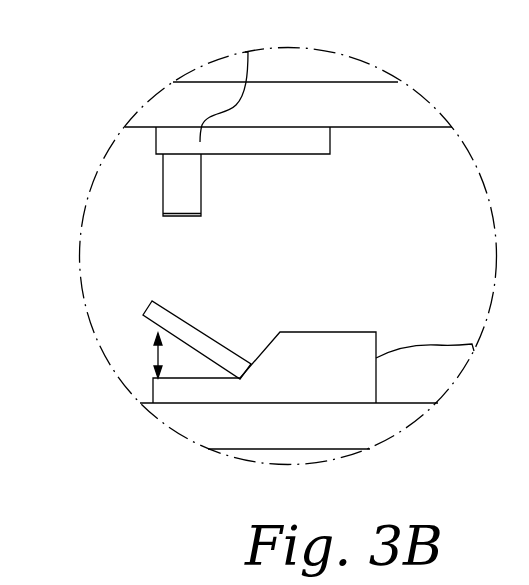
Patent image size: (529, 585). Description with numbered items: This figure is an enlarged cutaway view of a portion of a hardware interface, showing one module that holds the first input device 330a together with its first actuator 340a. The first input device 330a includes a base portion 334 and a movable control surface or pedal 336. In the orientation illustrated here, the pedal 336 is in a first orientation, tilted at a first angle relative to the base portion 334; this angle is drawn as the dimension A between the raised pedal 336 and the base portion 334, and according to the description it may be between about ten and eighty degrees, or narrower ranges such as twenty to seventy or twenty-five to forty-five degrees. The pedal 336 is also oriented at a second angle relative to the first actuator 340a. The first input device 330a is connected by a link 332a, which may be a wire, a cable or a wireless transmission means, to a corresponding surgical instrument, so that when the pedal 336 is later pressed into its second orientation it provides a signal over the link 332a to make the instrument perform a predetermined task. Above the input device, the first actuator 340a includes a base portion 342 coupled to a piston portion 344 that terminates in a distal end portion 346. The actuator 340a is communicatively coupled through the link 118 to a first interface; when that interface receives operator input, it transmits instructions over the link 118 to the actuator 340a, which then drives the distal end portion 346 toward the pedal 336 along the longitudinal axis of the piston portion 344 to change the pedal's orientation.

The link 118 is at (250, 68).
The first actuator 340a is at (147, 160).
The base portion 342 is at (178, 140).
The piston portion 344 is at (173, 183).
The distal end portion 346 is at (180, 212).
The pedal 336 is at (200, 332).
The first input device 330a is at (323, 332).
The link 332a is at (407, 352).
The base portion 334 is at (353, 397).
The dimension A is at (157, 350).